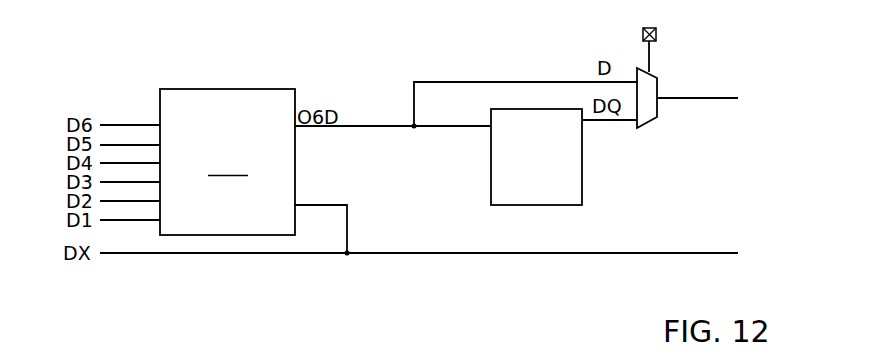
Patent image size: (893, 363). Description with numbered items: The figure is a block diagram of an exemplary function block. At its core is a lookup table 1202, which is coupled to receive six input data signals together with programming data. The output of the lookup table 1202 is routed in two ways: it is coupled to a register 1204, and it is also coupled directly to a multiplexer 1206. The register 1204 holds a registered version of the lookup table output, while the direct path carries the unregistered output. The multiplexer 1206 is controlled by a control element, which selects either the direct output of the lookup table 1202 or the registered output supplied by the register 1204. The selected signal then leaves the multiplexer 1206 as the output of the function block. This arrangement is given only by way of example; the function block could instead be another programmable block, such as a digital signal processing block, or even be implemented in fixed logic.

The lookup table 1202 is at (260, 86).
The register 1204 is at (585, 163).
The multiplexer 1206 is at (660, 80).